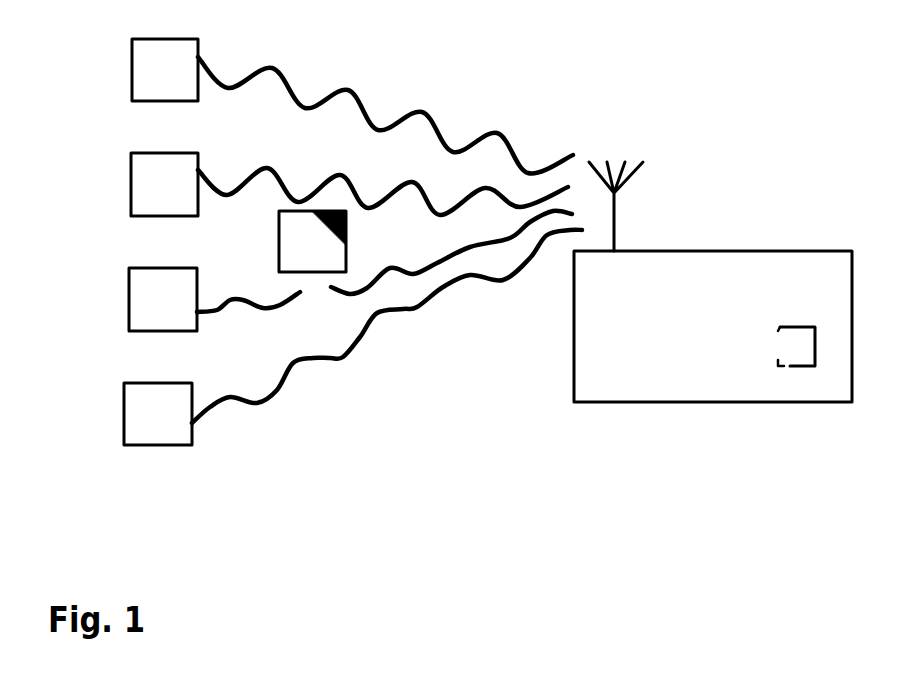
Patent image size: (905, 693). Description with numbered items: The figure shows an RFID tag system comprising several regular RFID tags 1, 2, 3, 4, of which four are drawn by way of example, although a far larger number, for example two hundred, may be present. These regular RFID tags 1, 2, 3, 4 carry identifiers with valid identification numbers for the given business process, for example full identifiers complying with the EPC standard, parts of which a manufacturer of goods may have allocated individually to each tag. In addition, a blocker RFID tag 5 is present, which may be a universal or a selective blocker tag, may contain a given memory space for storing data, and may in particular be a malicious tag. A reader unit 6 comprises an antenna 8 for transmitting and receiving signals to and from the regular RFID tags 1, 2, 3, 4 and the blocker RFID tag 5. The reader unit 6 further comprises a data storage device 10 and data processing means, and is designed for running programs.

The regular RFID tag 1 is at (130, 65).
The regular RFID tag 2 is at (130, 179).
The regular RFID tag 3 is at (129, 294).
The regular RFID tag 4 is at (124, 409).
The blocker RFID tag 5 is at (307, 273).
The reader unit 6 is at (657, 402).
The antenna 8 is at (620, 213).
The data storage device 10 is at (798, 366).